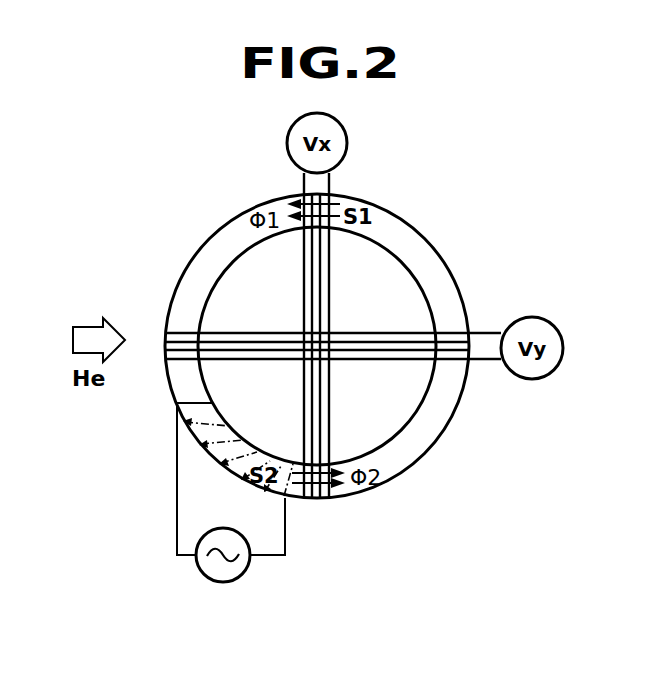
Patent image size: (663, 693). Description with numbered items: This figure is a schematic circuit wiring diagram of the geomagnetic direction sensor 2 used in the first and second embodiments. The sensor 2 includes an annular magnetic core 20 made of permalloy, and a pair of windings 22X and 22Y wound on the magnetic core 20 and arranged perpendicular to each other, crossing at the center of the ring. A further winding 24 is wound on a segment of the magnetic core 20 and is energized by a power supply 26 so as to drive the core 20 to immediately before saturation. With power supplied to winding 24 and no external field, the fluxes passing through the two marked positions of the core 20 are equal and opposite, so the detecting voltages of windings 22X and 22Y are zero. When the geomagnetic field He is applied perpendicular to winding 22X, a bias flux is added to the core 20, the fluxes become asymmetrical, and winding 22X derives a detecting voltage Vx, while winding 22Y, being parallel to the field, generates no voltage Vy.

The geomagnetic direction sensor 2 is at (191, 256).
The annular magnetic core 20 is at (428, 426).
The winding 22X is at (329, 273).
The winding 22Y is at (413, 337).
The winding 24 is at (205, 443).
The power supply 26 is at (242, 574).